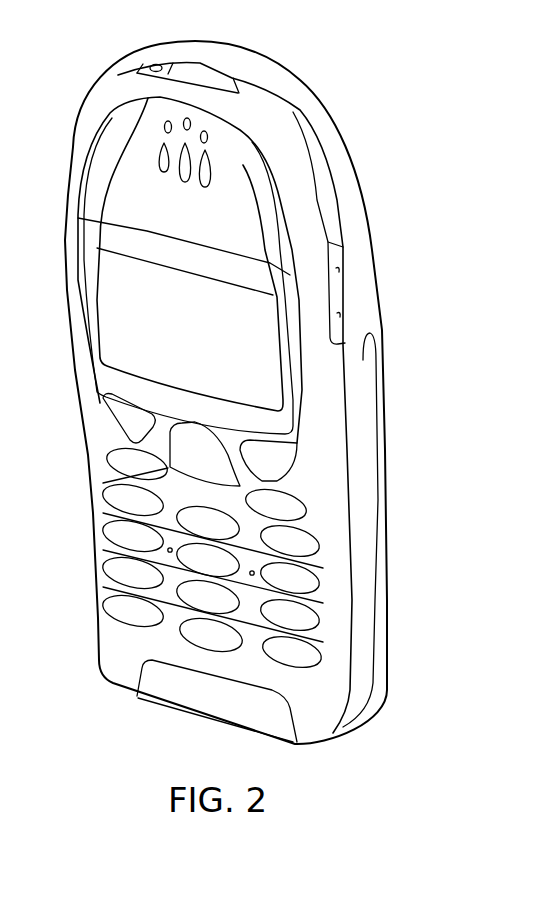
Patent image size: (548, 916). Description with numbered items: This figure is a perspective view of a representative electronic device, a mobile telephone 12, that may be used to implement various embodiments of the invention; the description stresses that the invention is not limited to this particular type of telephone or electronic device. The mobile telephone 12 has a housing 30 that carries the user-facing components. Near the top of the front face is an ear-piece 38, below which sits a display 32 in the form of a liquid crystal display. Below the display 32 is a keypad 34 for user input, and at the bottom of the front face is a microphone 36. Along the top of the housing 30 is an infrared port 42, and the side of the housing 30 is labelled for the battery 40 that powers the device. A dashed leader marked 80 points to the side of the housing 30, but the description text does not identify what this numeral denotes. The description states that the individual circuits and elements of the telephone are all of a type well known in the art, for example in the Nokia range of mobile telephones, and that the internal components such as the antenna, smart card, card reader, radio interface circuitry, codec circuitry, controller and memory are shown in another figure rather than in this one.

The mobile telephone 12 is at (320, 47).
The housing 30 is at (347, 183).
The display 32 is at (263, 368).
The keypad 34 is at (290, 657).
The microphone 36 is at (162, 690).
The ear-piece 38 is at (158, 143).
The battery 40 is at (385, 637).
The infrared port 42 is at (205, 72).
The antenna 80 is at (387, 515).